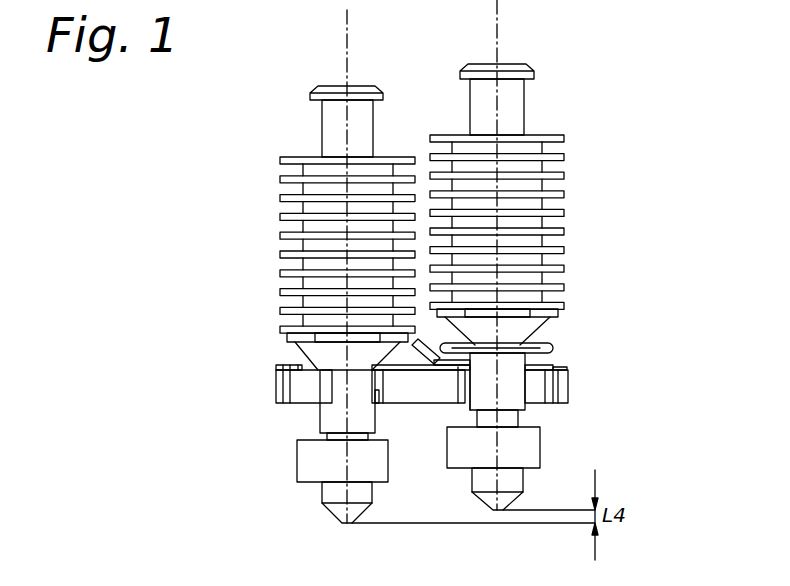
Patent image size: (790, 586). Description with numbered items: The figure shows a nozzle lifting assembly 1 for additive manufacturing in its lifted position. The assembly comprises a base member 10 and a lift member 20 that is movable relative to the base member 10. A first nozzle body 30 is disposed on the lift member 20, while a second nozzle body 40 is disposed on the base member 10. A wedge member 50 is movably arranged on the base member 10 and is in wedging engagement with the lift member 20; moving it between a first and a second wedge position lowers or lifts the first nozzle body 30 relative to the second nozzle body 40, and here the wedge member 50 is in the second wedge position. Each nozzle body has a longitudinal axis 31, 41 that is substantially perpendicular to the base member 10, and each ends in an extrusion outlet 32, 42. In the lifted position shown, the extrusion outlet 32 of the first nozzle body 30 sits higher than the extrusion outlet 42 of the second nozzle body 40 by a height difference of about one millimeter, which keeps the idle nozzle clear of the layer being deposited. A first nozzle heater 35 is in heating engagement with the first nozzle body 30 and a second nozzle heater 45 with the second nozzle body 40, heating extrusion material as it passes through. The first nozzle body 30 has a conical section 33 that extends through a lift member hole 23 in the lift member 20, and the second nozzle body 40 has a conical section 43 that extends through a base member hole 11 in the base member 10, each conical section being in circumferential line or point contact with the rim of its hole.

The nozzle lifting assembly 1 is at (628, 215).
The base member 10 is at (568, 385).
The base member hole 11 is at (377, 400).
The lift member 20 is at (552, 342).
The lift member hole 23 is at (553, 348).
The first nozzle body 30 is at (565, 135).
The longitudinal axis 31 is at (497, 20).
The extrusion outlet 32 is at (503, 510).
The conical section 33 is at (527, 330).
The first nozzle heater 35 is at (530, 442).
The second nozzle body 40 is at (282, 157).
The longitudinal axis 41 is at (347, 21).
The extrusion outlet 42 is at (343, 522).
The conical section 43 is at (306, 347).
The second nozzle heater 45 is at (300, 462).
The wedge member 50 is at (450, 362).